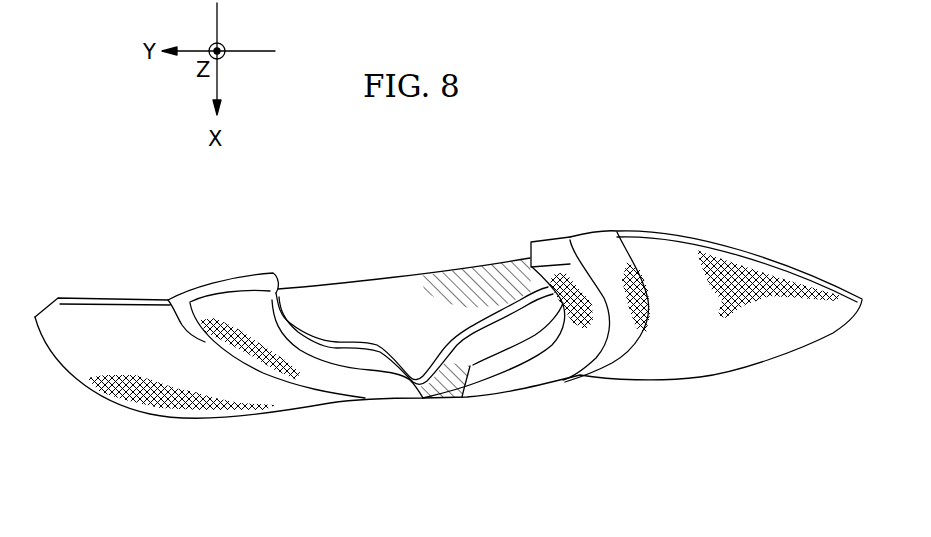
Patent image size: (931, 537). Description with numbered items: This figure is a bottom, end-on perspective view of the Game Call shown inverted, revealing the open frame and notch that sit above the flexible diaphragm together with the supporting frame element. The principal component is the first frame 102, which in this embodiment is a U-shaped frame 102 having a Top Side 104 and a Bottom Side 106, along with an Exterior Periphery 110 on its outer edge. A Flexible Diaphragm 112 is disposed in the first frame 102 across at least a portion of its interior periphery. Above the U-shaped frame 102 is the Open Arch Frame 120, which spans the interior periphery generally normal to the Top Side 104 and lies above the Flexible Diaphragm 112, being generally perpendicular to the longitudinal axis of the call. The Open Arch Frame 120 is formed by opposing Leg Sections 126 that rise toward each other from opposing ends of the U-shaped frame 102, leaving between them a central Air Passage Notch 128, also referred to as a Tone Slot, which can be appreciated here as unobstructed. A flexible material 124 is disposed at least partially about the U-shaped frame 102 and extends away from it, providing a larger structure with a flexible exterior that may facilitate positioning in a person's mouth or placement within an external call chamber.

The first frame 102 is at (566, 243).
The top side 104 is at (540, 381).
The bottom side 106 is at (231, 278).
The exterior periphery 110 is at (170, 318).
The flexible diaphragm 112 is at (440, 326).
The Open Arch Frame 120 is at (448, 388).
The flexible material 124 is at (727, 355).
The leg sections 126 is at (323, 334).
The Air Passage Notch 128 is at (420, 382).